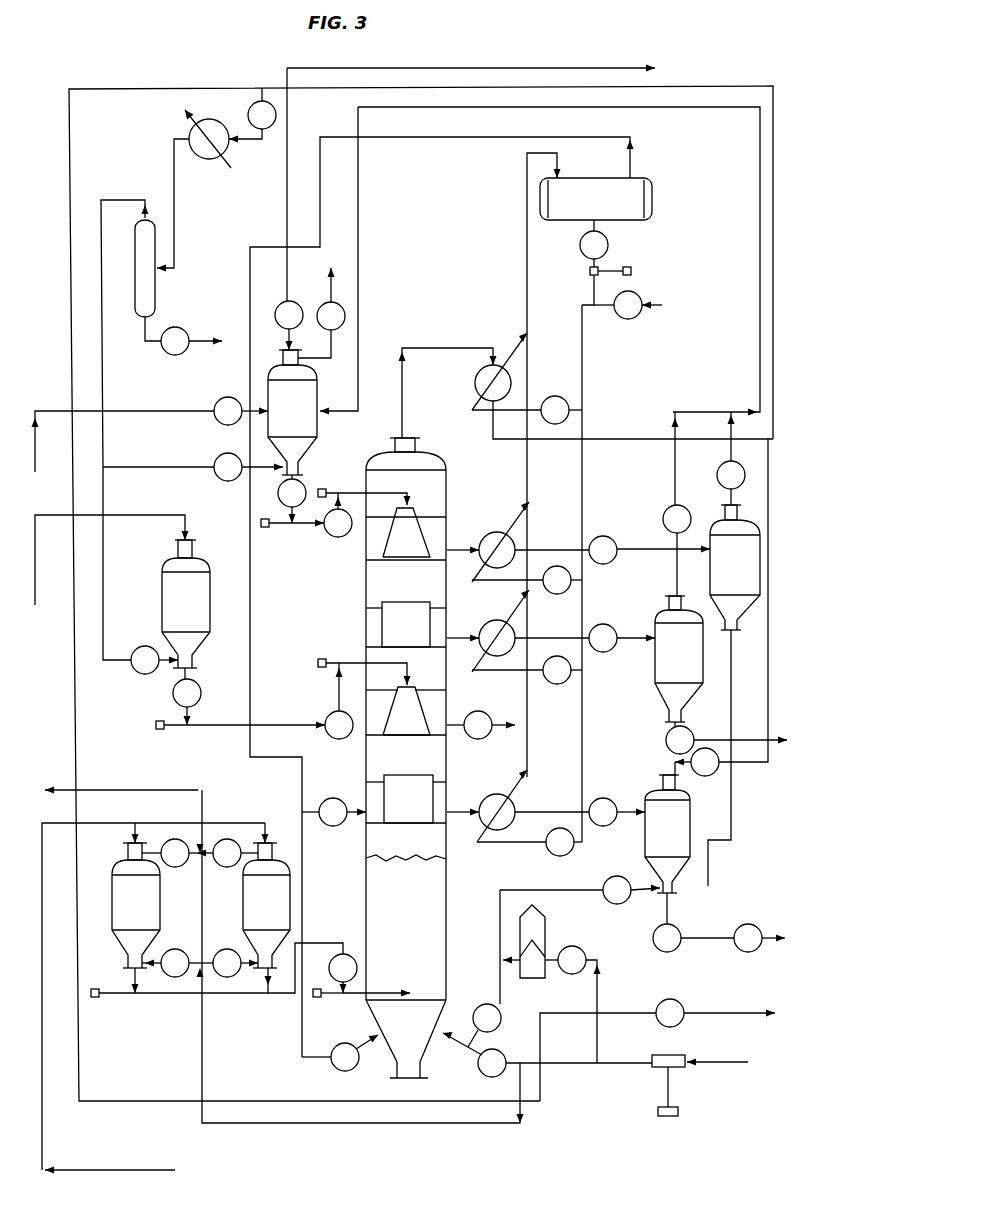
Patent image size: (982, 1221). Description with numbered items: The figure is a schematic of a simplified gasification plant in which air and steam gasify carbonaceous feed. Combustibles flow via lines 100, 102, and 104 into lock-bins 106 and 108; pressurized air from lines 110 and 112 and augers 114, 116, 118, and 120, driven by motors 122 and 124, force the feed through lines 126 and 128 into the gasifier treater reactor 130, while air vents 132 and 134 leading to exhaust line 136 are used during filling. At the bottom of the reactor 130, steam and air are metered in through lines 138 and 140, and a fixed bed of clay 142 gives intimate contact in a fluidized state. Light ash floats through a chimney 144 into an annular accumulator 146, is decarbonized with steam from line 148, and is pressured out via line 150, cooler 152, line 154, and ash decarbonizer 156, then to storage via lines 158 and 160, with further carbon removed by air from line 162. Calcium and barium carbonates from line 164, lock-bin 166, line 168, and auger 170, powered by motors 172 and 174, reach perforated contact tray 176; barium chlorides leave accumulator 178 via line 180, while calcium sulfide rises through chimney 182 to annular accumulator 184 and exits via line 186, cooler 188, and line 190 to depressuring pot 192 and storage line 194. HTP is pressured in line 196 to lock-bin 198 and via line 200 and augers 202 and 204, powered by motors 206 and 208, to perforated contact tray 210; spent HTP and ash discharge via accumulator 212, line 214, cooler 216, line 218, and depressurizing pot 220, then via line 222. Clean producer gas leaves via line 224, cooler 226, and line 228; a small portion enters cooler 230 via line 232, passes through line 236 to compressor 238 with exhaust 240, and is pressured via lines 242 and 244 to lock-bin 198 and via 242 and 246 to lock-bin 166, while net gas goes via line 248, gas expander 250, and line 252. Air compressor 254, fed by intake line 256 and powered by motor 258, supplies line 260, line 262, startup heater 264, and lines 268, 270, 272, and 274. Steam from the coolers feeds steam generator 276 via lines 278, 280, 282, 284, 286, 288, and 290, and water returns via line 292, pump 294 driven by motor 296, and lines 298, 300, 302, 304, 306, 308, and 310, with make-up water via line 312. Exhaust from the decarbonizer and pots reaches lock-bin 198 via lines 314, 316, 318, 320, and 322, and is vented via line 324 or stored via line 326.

The combustibles line 100 is at (124, 822).
The combustibles line 102 is at (130, 831).
The combustibles line 104 is at (165, 817).
The lock-bin 106 is at (178, 904).
The lock-bin 108 is at (242, 901).
The pressurized air line 110 is at (152, 956).
The pressurized air line 112 is at (246, 955).
The auger 114 is at (154, 996).
The auger 116 is at (236, 996).
The auger 118 is at (302, 943).
The auger 120 is at (362, 994).
The motor 122 is at (100, 980).
The motor 124 is at (318, 996).
The feed line 126 is at (137, 978).
The feed line 128 is at (272, 996).
The gasifier treater reactor 130 is at (366, 886).
The air vent 132 is at (147, 853).
The air vent 134 is at (240, 840).
The exhaust line 136 is at (150, 789).
The steam line 138 is at (364, 1061).
The air line 140 is at (462, 1042).
The fixed bed of clay 142 is at (420, 924).
The chimney 144 is at (406, 799).
The annular accumulator 146 is at (448, 792).
The steam line 148 is at (342, 804).
The ash line 150 is at (458, 828).
The cooler 152 is at (516, 806).
The ash line 154 is at (576, 805).
The ash decarbonizer 156 is at (708, 824).
The ash storage line 158 is at (668, 908).
The ash storage line 160 is at (766, 932).
The air line 162 is at (501, 946).
The carbonate feed line 164 is at (174, 527).
The lock-bin 166 is at (208, 590).
The carbonate line 168 is at (193, 676).
The auger 170 is at (205, 724).
The motor 172 is at (167, 739).
The motor 174 is at (316, 665).
The perforated contact tray 176 is at (406, 711).
The accumulator 178 is at (482, 719).
The barium chloride line 180 is at (466, 733).
The chimney 182 is at (382, 613).
The annular accumulator 184 is at (366, 636).
The calcium sulfide line 186 is at (454, 674).
The cooler 188 is at (492, 628).
The calcium sulfide line 190 is at (642, 638).
The depressuring pot 192 is at (652, 652).
The storage line 194 is at (706, 737).
The HTP line 196 is at (254, 395).
The lock-bin 198 is at (330, 396).
The HTP line 200 is at (298, 474).
The auger 202 is at (330, 536).
The auger 204 is at (350, 490).
The motor 206 is at (266, 528).
The motor 208 is at (328, 488).
The perforated contact tray 210 is at (430, 526).
The accumulator 212 is at (444, 524).
The discharge line 214 is at (446, 561).
The cooler 216 is at (478, 550).
The discharge line 218 is at (702, 554).
The depressurizing pot 220 is at (752, 574).
The residual ash line 222 is at (731, 681).
The producer gas line 224 is at (432, 347).
The cooler 226 is at (476, 375).
The producer gas line 228 is at (266, 88).
The cooler 230 is at (222, 112).
The producer gas line 232 is at (261, 139).
The producer gas line 236 is at (172, 144).
The compressor 238 is at (134, 284).
The exhaust 240 is at (152, 332).
The compressed gas line 242 is at (116, 201).
The compressed gas line 244 is at (200, 450).
The compressed gas line 246 is at (104, 490).
The net producer gas line 248 is at (210, 88).
The gas expander 250 is at (684, 1007).
The producer gas delivery line 252 is at (740, 1011).
The air compressor 254 is at (676, 1055).
The intake line 256 is at (706, 1062).
The motor 258 is at (678, 1112).
The air line 260 is at (636, 1065).
The air line 262 is at (556, 960).
The startup heater 264 is at (538, 926).
The air line 268 is at (494, 996).
The air line 270 is at (577, 1064).
The air line 272 is at (518, 1058).
The air line 274 is at (522, 1102).
The steam generator 276 is at (652, 194).
The steam line 278 is at (528, 767).
The steam line 280 is at (528, 616).
The steam line 282 is at (568, 544).
The steam line 284 is at (518, 516).
The steam line 286 is at (530, 482).
The steam line 288 is at (514, 354).
The steam line 290 is at (548, 157).
The cooling water return line 292 is at (598, 230).
The pump 294 is at (584, 270).
The motor 296 is at (633, 264).
The cooling water line 298 is at (596, 310).
The cooling water line 300 is at (537, 404).
The cooling water line 302 is at (584, 465).
The cooling water line 304 is at (516, 589).
The cooling water line 306 is at (582, 616).
The cooling water line 308 is at (527, 675).
The cooling water line 310 is at (504, 842).
The make-up water line 312 is at (648, 313).
The exhaust line 314 is at (756, 431).
The exhaust line 316 is at (690, 400).
The exhaust line 318 is at (728, 443).
The exhaust line 320 is at (748, 410).
The exhaust line 322 is at (358, 272).
The vent line 324 is at (319, 313).
The storage transfer line 326 is at (612, 56).